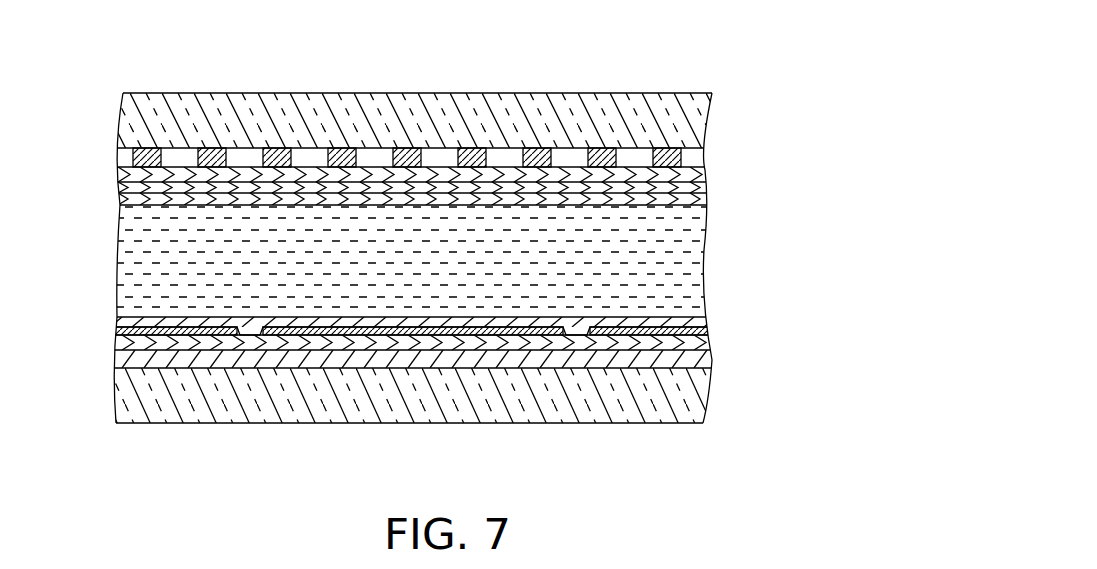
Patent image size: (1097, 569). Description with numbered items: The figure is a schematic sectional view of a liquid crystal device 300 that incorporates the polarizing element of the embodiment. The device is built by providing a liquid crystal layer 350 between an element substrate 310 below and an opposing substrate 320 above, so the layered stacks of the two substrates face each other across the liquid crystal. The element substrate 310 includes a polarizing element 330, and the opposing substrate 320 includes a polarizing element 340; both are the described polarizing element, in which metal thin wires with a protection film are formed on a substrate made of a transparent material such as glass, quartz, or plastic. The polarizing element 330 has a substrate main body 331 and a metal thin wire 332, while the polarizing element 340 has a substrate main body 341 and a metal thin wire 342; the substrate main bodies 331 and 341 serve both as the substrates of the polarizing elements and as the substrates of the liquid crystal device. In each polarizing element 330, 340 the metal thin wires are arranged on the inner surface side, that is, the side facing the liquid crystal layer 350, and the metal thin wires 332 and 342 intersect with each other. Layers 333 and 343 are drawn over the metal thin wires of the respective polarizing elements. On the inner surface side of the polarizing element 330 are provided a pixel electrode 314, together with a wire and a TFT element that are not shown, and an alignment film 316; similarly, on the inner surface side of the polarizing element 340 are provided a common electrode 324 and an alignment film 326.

The liquid crystal device 300 is at (682, 90).
The element substrate 310 is at (446, 388).
The pixel electrode 314 is at (163, 334).
The alignment film 316 is at (706, 323).
The opposing substrate 320 is at (451, 163).
The common electrode 324 is at (706, 187).
The alignment film 326 is at (706, 199).
The polarizing element 330 is at (479, 371).
The substrate main body 331 is at (444, 395).
The metal thin wire 332 is at (697, 359).
The insulating layer 333 is at (706, 343).
The polarizing element 340 is at (484, 140).
The substrate main body 341 is at (702, 120).
The metal thin wire 342 is at (686, 157).
The overcoat layer 343 is at (451, 172).
The liquid crystal layer 350 is at (706, 262).